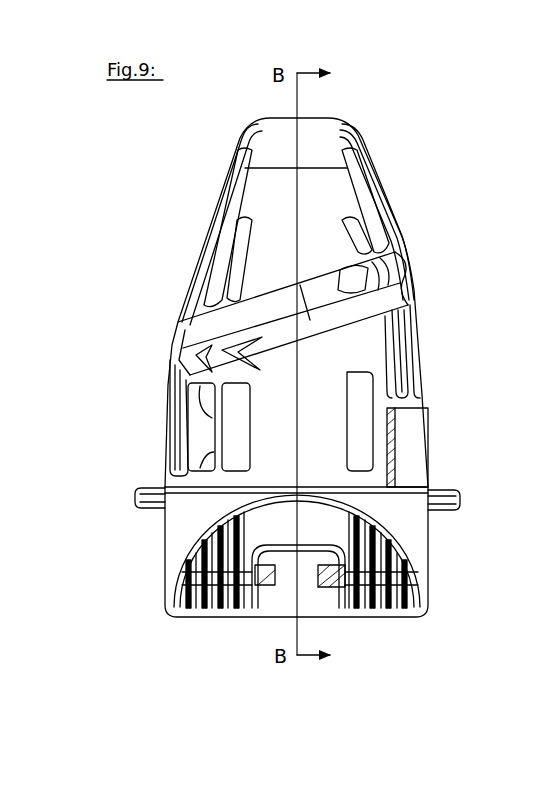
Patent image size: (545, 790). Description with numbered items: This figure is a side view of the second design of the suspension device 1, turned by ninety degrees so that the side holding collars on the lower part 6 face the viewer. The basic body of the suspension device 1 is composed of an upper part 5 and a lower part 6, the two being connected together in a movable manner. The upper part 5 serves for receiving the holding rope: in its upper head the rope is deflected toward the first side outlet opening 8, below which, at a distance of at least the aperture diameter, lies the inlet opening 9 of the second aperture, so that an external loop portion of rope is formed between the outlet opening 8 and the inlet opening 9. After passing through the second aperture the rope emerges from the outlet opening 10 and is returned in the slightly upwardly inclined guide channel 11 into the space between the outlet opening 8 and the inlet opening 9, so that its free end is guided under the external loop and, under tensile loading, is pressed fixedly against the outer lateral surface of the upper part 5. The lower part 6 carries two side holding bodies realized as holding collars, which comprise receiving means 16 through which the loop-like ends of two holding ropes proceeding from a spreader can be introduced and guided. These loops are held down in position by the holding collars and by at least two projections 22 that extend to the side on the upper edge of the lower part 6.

The suspension device 1 is at (394, 122).
The first side outlet opening 8 is at (404, 221).
The inlet opening of the second aperture 9 is at (428, 337).
The upper part 5 is at (430, 402).
The projections 22 is at (436, 487).
The receiving means 16 is at (310, 571).
The guide channel 11 is at (270, 320).
The outlet opening of the second aperture 10 is at (162, 348).
The lower part 6 is at (166, 533).